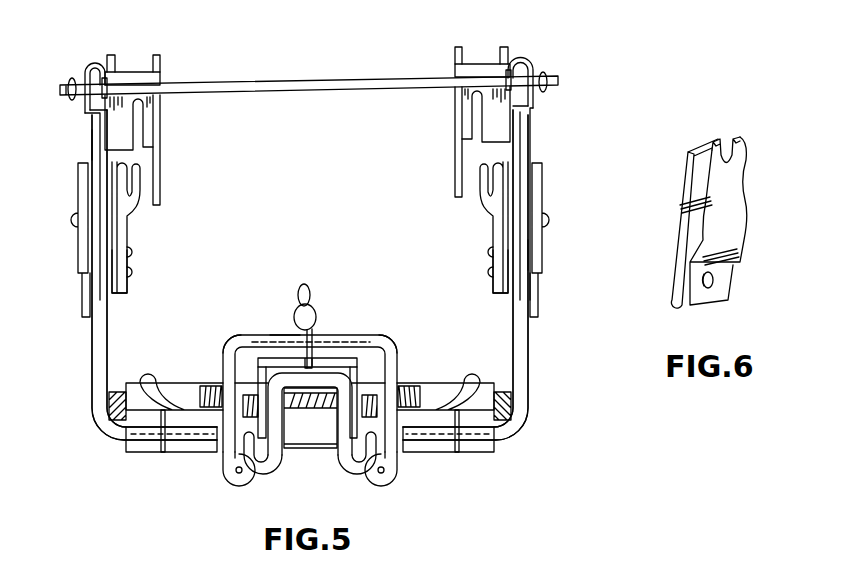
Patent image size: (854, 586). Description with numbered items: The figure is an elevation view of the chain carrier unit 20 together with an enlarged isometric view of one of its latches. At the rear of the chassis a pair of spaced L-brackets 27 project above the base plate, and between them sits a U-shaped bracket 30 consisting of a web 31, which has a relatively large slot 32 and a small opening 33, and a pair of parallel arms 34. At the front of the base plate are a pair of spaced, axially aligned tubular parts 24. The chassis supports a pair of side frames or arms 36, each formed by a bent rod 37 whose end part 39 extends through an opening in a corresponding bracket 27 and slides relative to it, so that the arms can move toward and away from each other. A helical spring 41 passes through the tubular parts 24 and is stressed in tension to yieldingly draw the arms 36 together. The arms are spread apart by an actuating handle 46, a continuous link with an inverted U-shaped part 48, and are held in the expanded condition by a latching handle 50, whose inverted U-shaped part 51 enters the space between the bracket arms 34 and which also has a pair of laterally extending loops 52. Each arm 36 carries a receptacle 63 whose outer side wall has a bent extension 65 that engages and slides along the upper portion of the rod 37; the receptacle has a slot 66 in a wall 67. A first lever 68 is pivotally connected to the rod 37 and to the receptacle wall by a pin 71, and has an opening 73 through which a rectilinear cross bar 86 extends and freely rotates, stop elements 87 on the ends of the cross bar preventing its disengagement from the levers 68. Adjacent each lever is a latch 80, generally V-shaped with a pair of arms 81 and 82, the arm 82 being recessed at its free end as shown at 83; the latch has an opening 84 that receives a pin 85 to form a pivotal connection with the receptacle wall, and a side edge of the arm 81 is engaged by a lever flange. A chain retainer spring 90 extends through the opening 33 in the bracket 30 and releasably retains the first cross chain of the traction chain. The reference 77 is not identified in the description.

In FIG. 5, the chain carrier unit 20 is at (100, 446).
In FIG. 5, the tubular parts 24 is at (185, 382).
In FIG. 5, the L-brackets 27 is at (163, 453).
In FIG. 5, the U-shaped bracket 30 is at (268, 358).
In FIG. 5, the web 31 is at (347, 360).
In FIG. 5, the slot 32 is at (322, 418).
In FIG. 5, the opening 33 is at (331, 352).
In FIG. 5, the arms 34 is at (238, 345).
In FIG. 5, the side frames or arms 36 is at (88, 142).
In FIG. 5, the rod 37 is at (93, 377).
In FIG. 5, the end part 39 is at (189, 446).
In FIG. 5, the helical spring 41 is at (120, 391).
In FIG. 5, the handle 46 is at (387, 335).
In FIG. 5, the inverted U-shaped part 48 is at (289, 340).
In FIG. 5, the latching handle 50 is at (367, 482).
In FIG. 5, the inverted U-shaped part 51 is at (258, 474).
In FIG. 5, the loops 52 is at (226, 483).
In FIG. 5, the receptacle 63 is at (162, 75).
In FIG. 5, the bent extension 65 is at (94, 63).
In FIG. 5, the slot 66 is at (152, 148).
In FIG. 5, the wall 67 is at (150, 124).
In FIG. 5, the first lever 68 is at (86, 113).
In FIG. 5, the pin 71 is at (74, 228).
In FIG. 5, the opening 73 is at (110, 78).
In FIG. 5, the tab 77 is at (125, 286).
In FIG. 5, the latch 80 is at (132, 250).
In FIG. 6, the latch 80 is at (745, 182).
In FIG. 6, the arm 81 is at (684, 177).
In FIG. 6, the arm 82 is at (730, 233).
In FIG. 6, the recess 83 is at (727, 140).
In FIG. 6, the opening 84 is at (713, 282).
In FIG. 5, the pin 85 is at (132, 262).
In FIG. 5, the cross bar 86 is at (311, 80).
In FIG. 5, the stop elements 87 is at (72, 78).
In FIG. 5, the chain retainer spring 90 is at (311, 300).